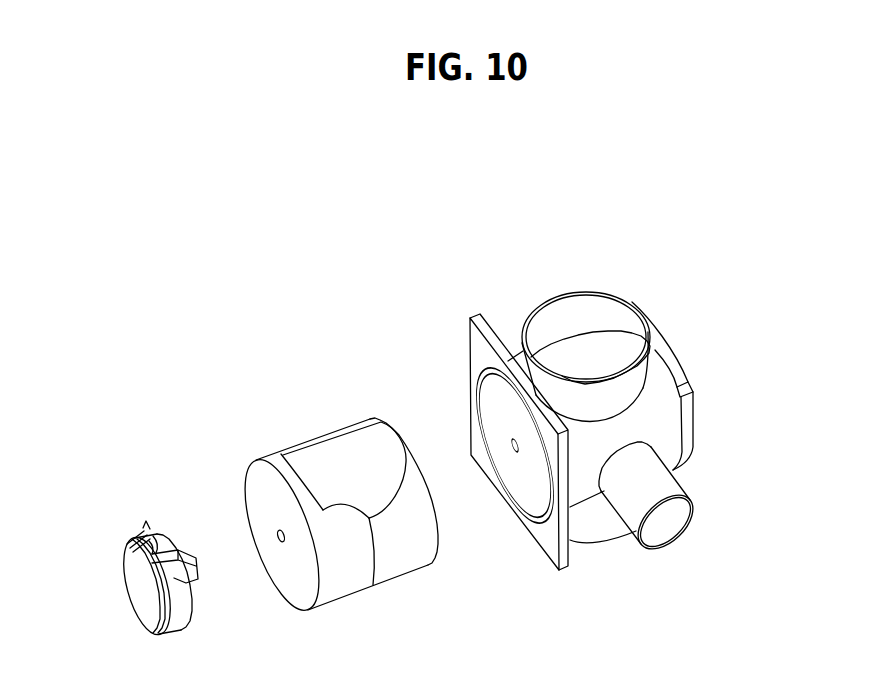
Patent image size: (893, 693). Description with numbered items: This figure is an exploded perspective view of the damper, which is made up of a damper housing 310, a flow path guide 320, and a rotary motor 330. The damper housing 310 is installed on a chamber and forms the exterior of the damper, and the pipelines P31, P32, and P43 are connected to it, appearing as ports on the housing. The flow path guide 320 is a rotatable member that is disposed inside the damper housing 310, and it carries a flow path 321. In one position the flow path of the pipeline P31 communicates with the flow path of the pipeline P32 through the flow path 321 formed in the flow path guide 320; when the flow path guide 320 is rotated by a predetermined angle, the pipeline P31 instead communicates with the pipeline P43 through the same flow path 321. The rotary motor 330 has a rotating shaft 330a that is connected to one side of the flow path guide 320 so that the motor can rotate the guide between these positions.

The damper housing 310 is at (667, 412).
The flow path guide 320 is at (266, 481).
The flow path 321 is at (351, 467).
The rotary motor 330 is at (135, 572).
The rotating shaft 330a is at (190, 577).
The pipeline P31 is at (608, 534).
The pipeline P32 is at (565, 307).
The pipeline P43 is at (677, 518).